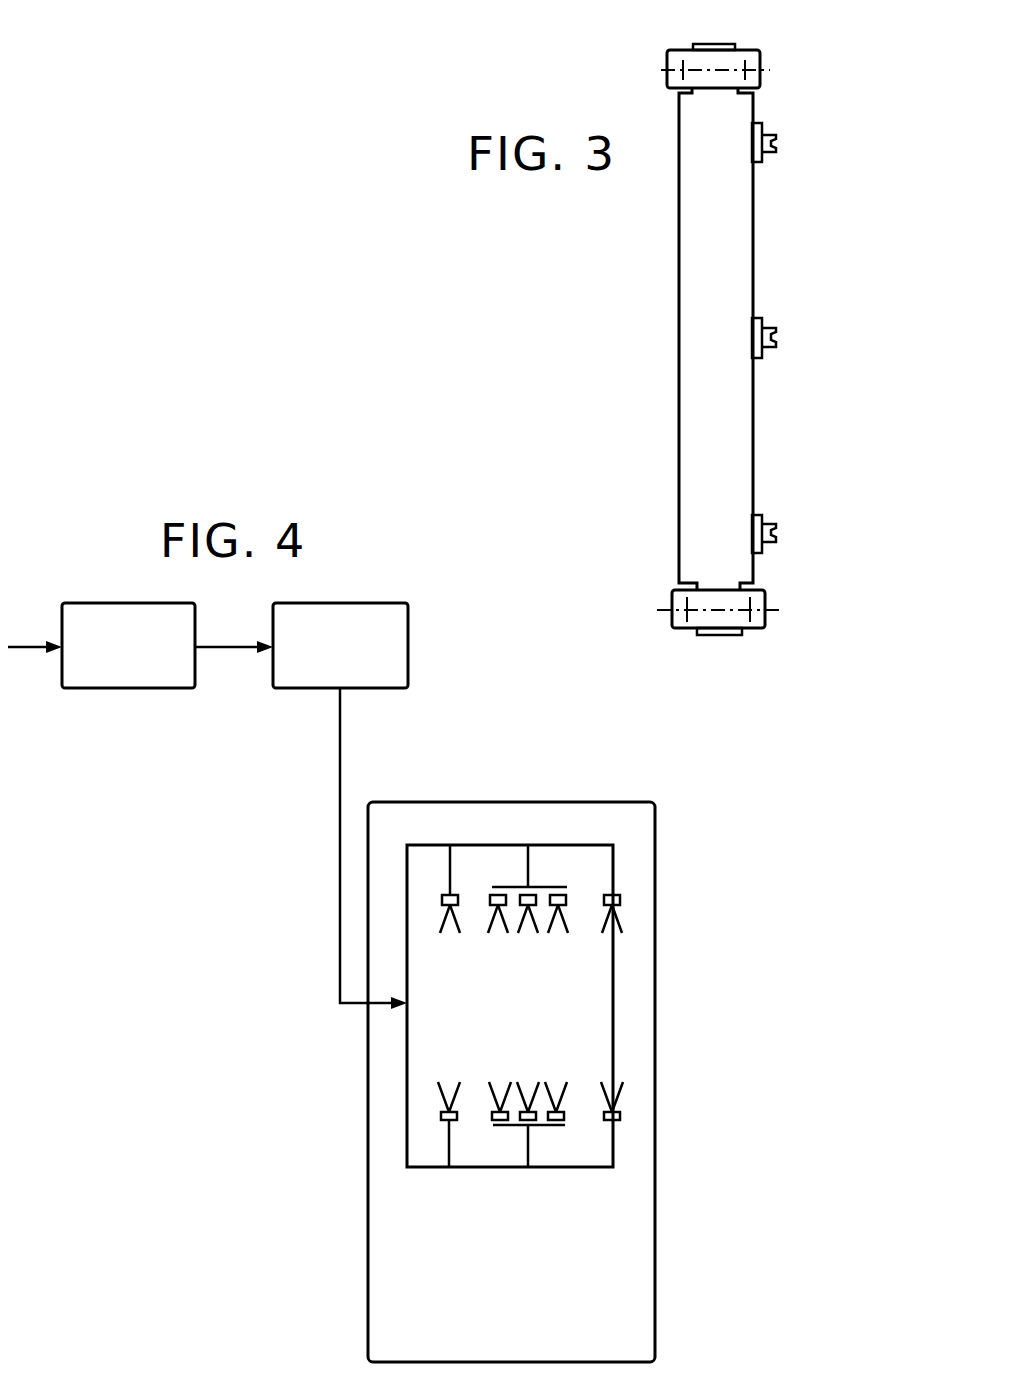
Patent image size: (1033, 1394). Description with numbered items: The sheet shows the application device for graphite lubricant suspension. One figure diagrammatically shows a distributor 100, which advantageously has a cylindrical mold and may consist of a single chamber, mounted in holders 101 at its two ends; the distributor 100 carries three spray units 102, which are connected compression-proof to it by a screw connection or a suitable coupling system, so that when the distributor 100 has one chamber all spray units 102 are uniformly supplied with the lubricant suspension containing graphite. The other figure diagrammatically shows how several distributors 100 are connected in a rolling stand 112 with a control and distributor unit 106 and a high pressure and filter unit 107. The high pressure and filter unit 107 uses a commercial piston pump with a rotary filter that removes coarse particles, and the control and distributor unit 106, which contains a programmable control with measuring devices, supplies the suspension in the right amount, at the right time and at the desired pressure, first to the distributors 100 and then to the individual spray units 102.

In FIG. 3, the distributor 100 is at (665, 331).
In FIG. 4, the distributor 100 is at (553, 860).
In FIG. 3, the holders 101 is at (775, 58).
In FIG. 3, the spray units 102 is at (794, 139).
In FIG. 4, the control and distributor unit 106 is at (318, 661).
In FIG. 4, the high pressure and filter unit 107 is at (106, 661).
In FIG. 4, the enclosure 112 is at (520, 1293).